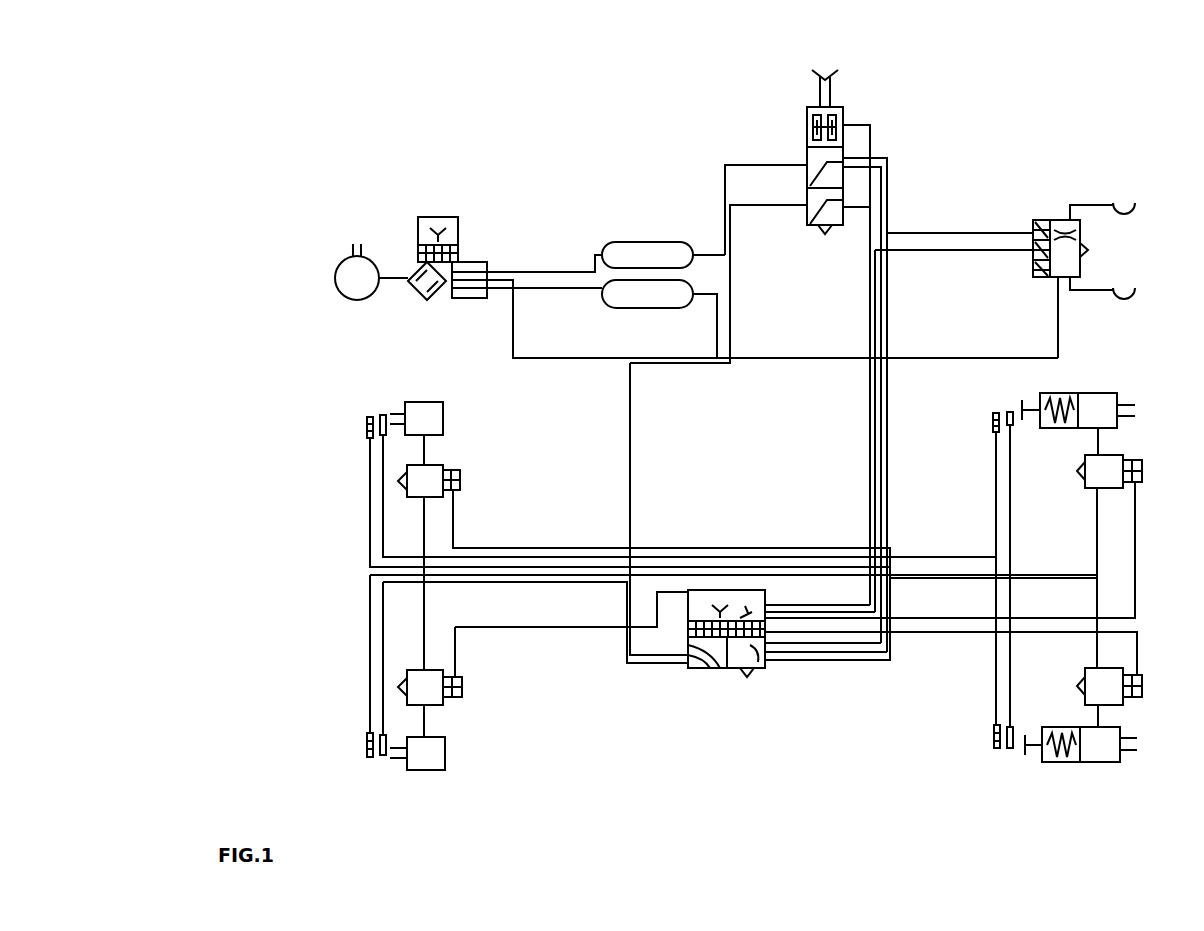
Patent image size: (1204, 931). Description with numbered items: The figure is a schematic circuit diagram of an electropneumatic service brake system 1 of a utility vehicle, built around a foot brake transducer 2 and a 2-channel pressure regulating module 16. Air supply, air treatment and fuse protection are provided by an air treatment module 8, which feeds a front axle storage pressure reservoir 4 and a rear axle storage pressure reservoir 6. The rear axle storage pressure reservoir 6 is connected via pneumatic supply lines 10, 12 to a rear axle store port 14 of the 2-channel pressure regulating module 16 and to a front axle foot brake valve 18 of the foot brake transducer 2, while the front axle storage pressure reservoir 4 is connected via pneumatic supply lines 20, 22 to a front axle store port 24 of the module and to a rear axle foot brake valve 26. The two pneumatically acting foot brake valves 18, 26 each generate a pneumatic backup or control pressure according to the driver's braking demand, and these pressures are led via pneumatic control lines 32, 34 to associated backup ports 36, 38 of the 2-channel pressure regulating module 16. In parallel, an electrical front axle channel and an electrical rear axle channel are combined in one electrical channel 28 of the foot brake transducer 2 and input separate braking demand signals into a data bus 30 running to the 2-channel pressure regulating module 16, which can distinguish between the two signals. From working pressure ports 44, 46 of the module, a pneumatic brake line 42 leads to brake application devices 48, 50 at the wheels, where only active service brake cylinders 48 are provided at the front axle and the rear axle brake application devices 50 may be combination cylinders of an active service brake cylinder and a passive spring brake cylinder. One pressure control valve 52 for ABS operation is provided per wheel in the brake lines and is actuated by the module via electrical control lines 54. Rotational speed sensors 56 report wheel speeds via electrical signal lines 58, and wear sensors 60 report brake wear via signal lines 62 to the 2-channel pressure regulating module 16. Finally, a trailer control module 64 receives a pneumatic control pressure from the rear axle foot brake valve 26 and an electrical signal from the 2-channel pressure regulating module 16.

The electropneumatic service brake system 1 is at (401, 96).
The foot brake transducer 2 is at (797, 91).
The front axle storage pressure reservoir 4 is at (606, 257).
The rear axle storage pressure reservoir 6 is at (590, 294).
The air treatment module 8 is at (455, 233).
The pneumatic supply line 10 is at (717, 318).
The pneumatic supply line 12 is at (762, 208).
The rear axle store port 14 is at (715, 670).
The 2-channel pressure regulating module 16 is at (765, 596).
The front axle foot brake valve 18 is at (836, 222).
The pneumatic supply line 20 is at (733, 329).
The pneumatic supply line 22 is at (723, 179).
The front axle store port 24 is at (740, 670).
The rear axle foot brake valve 26 is at (812, 150).
The electrical channel 28 is at (836, 114).
The data bus 30 is at (868, 388).
The pneumatic control line 32 is at (887, 282).
The pneumatic control line 34 is at (881, 322).
The backup port 36 is at (743, 653).
The backup port 38 is at (760, 670).
The pneumatic brake line 42 is at (551, 587).
The working pressure port 44 is at (765, 662).
The working pressure port 46 is at (712, 670).
The brake application device 48 is at (443, 413).
The brake application device 50 is at (1105, 395).
The pressure control valve 52 is at (440, 473).
The electrical control line 54 is at (453, 516).
The rotational speed sensor 56 is at (367, 418).
The electrical signal line 58 is at (370, 495).
The wear sensor 60 is at (383, 415).
The signal line 62 is at (383, 533).
The trailer control module 64 is at (1057, 220).